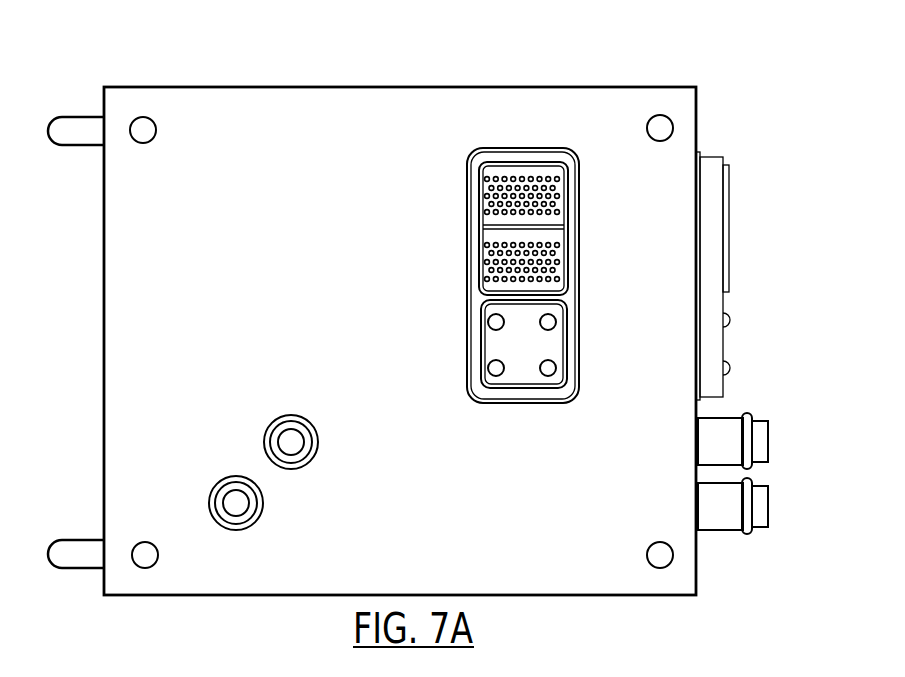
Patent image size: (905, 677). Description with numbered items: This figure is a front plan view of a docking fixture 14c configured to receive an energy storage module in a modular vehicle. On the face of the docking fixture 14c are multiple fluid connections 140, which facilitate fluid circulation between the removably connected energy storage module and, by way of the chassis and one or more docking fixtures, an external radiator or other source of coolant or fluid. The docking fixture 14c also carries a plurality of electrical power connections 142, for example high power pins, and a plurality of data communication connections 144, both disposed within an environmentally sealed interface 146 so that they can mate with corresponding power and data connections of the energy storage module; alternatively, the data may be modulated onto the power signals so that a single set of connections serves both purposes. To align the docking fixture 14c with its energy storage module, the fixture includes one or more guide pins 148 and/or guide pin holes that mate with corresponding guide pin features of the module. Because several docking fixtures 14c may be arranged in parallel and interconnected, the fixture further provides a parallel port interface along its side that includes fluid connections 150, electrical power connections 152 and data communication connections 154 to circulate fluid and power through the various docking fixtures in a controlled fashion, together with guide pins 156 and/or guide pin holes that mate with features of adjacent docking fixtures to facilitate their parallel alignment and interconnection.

The docking fixture 14c is at (726, 105).
The fluid connections 140 is at (290, 495).
The electrical power connections 142 is at (530, 345).
The data communication connections 144 is at (560, 206).
The environmentally sealed interface 146 is at (519, 420).
The guide pins 148 is at (157, 131).
The fluid connections 150 is at (776, 413).
The electrical power connections 152 is at (731, 320).
The data communication connections 154 is at (729, 226).
The guide pins 156 is at (77, 132).